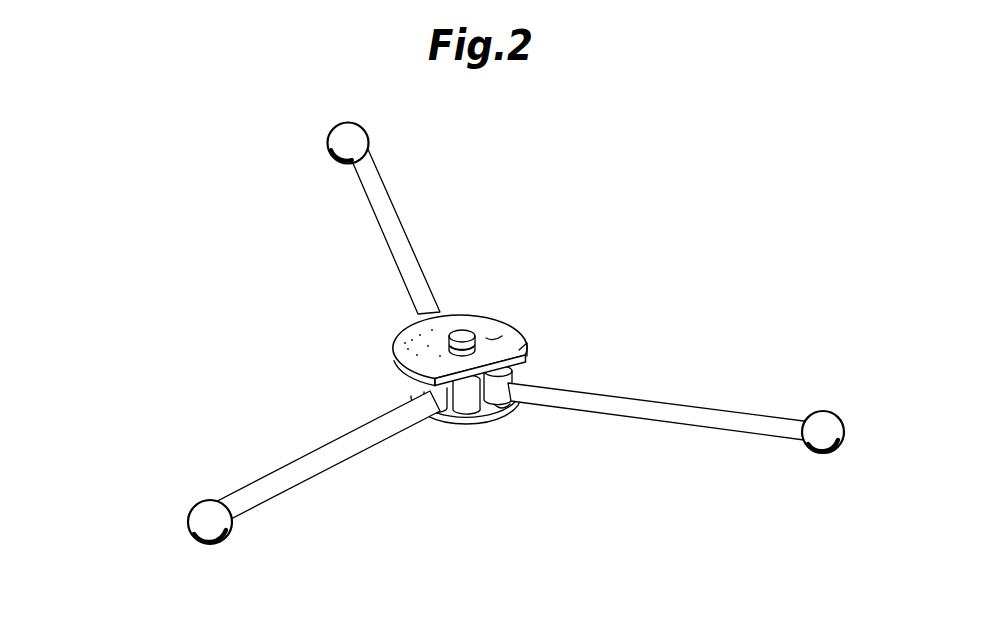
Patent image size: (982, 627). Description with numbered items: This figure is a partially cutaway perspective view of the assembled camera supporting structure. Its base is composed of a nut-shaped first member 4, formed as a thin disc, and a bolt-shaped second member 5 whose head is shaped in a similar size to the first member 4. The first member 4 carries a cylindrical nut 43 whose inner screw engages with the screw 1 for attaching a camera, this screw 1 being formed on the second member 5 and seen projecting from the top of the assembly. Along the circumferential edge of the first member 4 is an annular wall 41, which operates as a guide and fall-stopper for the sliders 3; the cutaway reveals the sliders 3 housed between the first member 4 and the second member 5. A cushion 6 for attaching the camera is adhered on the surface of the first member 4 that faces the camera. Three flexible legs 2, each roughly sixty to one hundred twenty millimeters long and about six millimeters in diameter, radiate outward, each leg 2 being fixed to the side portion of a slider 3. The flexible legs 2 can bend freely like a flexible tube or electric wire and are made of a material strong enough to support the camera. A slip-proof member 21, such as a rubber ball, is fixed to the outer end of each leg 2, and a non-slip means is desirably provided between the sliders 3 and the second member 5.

The screw 1 is at (463, 333).
The flexible leg 2 is at (372, 186).
The slip-proof member 21 is at (330, 140).
The slider 3 is at (512, 371).
The first member 4 is at (393, 338).
The annular wall 41 is at (523, 357).
The cylindrical nut 43 is at (502, 410).
The second member 5 is at (467, 413).
The cushion 6 is at (494, 336).